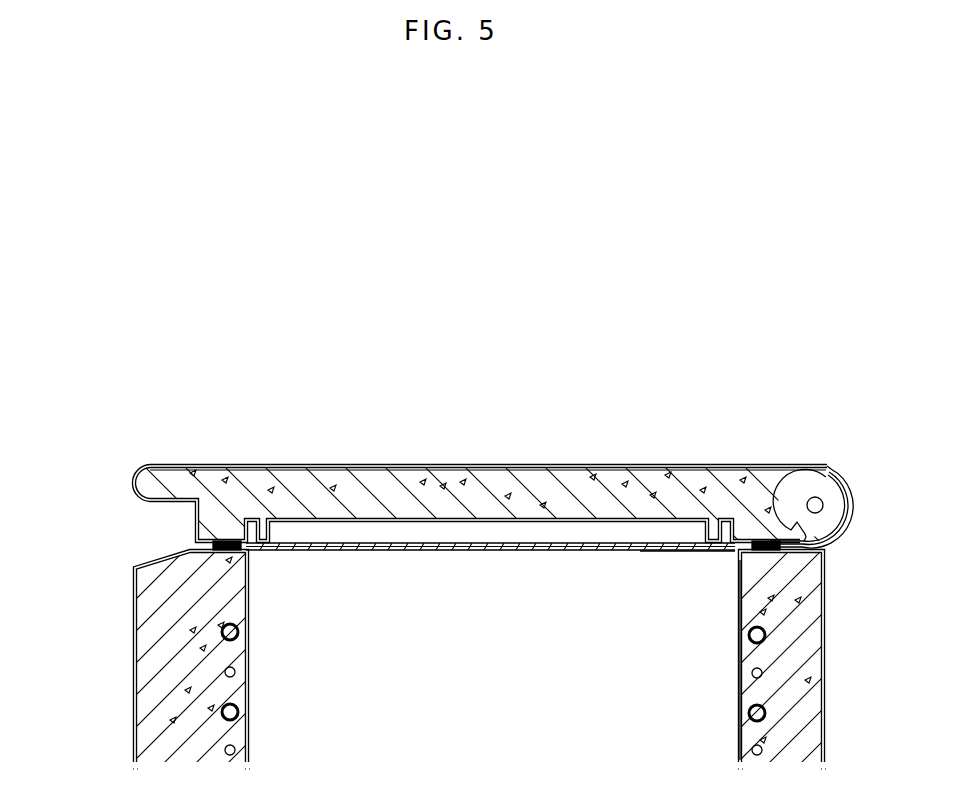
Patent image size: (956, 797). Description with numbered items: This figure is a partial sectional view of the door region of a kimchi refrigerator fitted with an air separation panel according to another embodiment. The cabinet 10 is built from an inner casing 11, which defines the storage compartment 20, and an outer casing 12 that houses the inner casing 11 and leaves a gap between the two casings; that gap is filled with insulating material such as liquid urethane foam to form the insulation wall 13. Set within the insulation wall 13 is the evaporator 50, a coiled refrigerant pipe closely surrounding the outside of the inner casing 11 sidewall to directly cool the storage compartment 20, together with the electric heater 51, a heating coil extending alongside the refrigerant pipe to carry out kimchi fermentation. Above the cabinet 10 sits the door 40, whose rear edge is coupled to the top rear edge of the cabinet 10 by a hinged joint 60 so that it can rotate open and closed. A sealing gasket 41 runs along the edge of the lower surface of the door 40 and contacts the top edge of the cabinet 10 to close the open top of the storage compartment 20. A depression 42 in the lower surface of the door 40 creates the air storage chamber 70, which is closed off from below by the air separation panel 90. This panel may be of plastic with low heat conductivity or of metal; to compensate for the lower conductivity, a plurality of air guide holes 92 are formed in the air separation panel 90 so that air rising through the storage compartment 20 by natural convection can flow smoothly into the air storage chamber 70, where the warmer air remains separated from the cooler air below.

The cabinet 10 is at (118, 607).
The inner casing 11 is at (740, 701).
The outer casing 12 is at (823, 577).
The insulation wall 13 is at (155, 678).
The storage compartment 20 is at (527, 676).
The door 40 is at (672, 440).
The sealing gasket 41 is at (215, 547).
The depression 42 is at (574, 518).
The evaporator 50 is at (766, 635).
The electric heater 51 is at (763, 674).
The hinged joint 60 is at (823, 505).
The air storage chamber 70 is at (442, 535).
The air separation panel 90 is at (412, 568).
The air guide holes 92 is at (688, 553).